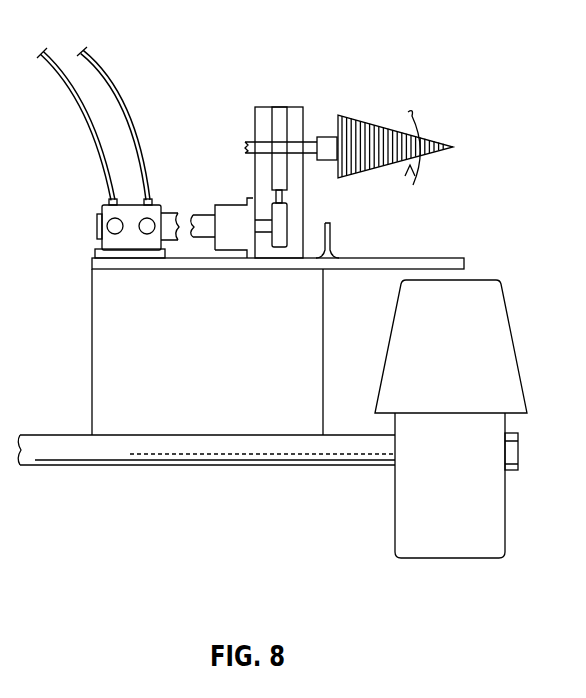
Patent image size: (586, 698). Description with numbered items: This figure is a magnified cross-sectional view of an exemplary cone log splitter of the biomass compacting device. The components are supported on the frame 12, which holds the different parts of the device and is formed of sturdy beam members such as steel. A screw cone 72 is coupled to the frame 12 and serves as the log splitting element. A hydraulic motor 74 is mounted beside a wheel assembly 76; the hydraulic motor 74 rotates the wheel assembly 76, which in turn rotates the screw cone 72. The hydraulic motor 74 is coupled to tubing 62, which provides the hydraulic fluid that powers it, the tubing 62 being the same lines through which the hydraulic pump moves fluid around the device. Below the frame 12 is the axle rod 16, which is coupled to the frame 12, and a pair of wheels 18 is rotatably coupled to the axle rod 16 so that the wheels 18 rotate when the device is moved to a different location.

The frame 12 is at (400, 258).
The axle rod 16 is at (166, 467).
The wheels 18 is at (463, 558).
The tubing 62 is at (98, 63).
The screw cone 72 is at (370, 122).
The hydraulic motor 74 is at (97, 222).
The wheel assembly 76 is at (280, 110).